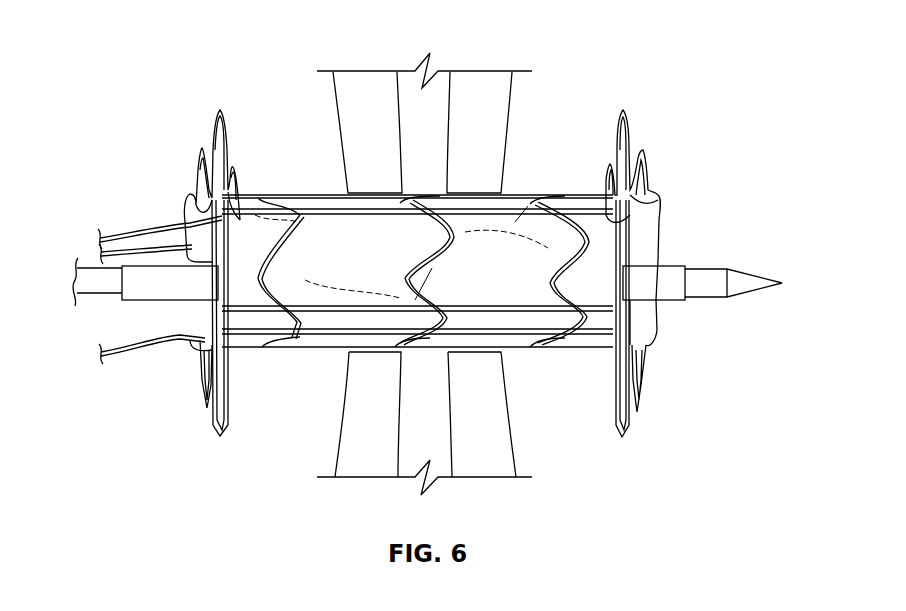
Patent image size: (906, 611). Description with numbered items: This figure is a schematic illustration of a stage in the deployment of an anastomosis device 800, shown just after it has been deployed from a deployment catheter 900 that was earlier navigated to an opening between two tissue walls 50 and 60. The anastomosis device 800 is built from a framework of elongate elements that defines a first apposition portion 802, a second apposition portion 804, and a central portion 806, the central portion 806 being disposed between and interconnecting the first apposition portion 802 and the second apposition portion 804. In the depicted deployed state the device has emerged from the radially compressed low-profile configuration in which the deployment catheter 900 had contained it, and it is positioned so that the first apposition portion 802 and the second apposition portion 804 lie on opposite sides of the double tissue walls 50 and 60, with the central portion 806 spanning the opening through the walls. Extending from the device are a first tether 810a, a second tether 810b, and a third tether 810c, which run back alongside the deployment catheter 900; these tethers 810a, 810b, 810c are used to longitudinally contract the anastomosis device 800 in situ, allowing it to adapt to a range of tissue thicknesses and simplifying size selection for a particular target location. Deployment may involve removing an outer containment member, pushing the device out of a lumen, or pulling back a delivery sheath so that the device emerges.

The tissue wall 50 is at (384, 153).
The tissue wall 60 is at (490, 153).
The anastomosis device 800 is at (445, 251).
The first apposition portion 802 is at (642, 142).
The second apposition portion 804 is at (207, 122).
The central portion 806 is at (305, 180).
The first tether 810a is at (166, 225).
The second tether 810b is at (115, 245).
The third tether 810c is at (132, 353).
The deployment catheter 900 is at (707, 245).